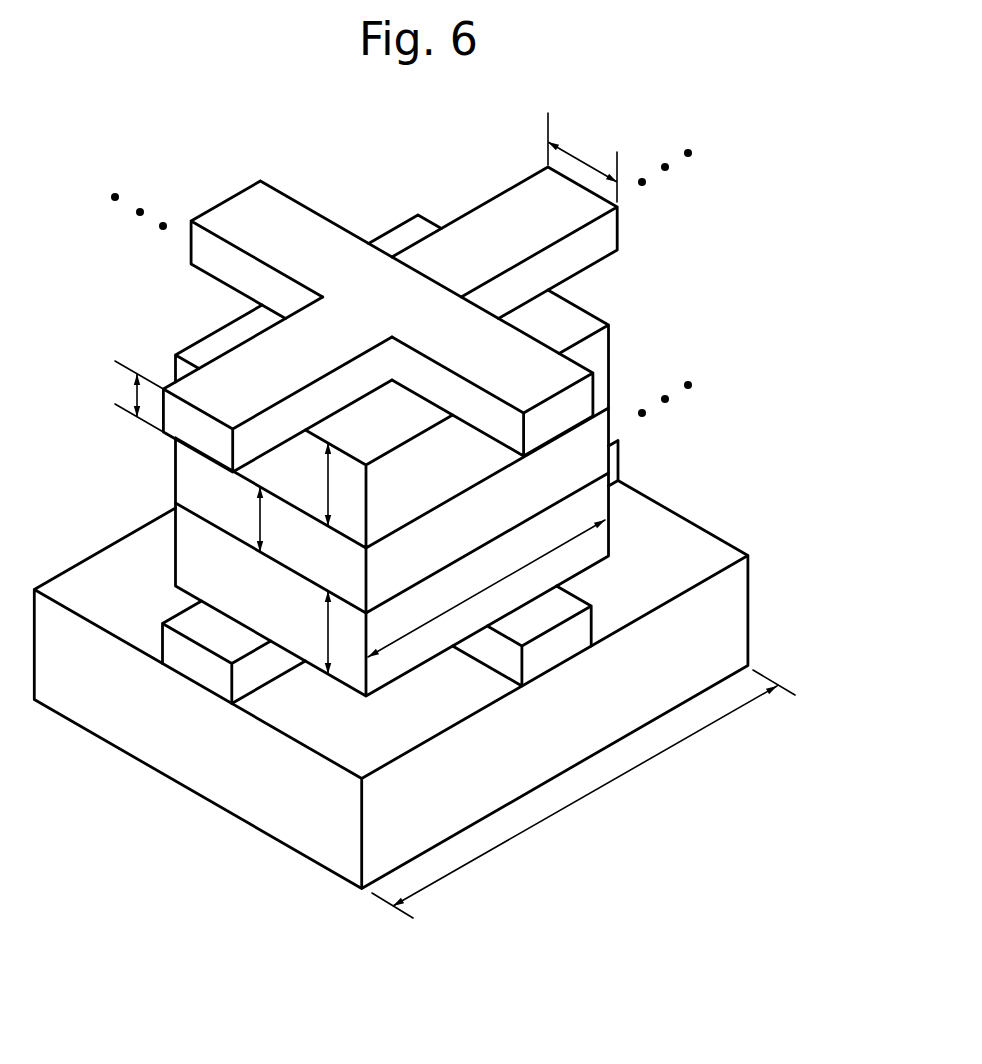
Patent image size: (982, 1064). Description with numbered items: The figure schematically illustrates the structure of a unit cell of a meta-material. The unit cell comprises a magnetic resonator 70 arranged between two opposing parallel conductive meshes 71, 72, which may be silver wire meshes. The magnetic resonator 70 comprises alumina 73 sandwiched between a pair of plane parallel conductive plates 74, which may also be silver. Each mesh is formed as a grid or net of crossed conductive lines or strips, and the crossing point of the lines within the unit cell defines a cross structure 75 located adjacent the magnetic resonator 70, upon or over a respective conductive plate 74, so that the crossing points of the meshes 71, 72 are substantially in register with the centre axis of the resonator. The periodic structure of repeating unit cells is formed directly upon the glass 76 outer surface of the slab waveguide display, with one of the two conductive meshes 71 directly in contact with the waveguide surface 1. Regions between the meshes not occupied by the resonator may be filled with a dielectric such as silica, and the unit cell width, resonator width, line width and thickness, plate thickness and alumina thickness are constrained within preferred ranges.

The magnetic resonator 70 is at (690, 467).
The conductive mesh 71 is at (192, 668).
The conductive mesh 72 is at (258, 182).
The alumina 73 is at (595, 432).
The conductive plate 74 is at (572, 313).
The cross structure 75 is at (388, 300).
The glass 76 is at (391, 685).
The waveguide surface 1 is at (278, 808).